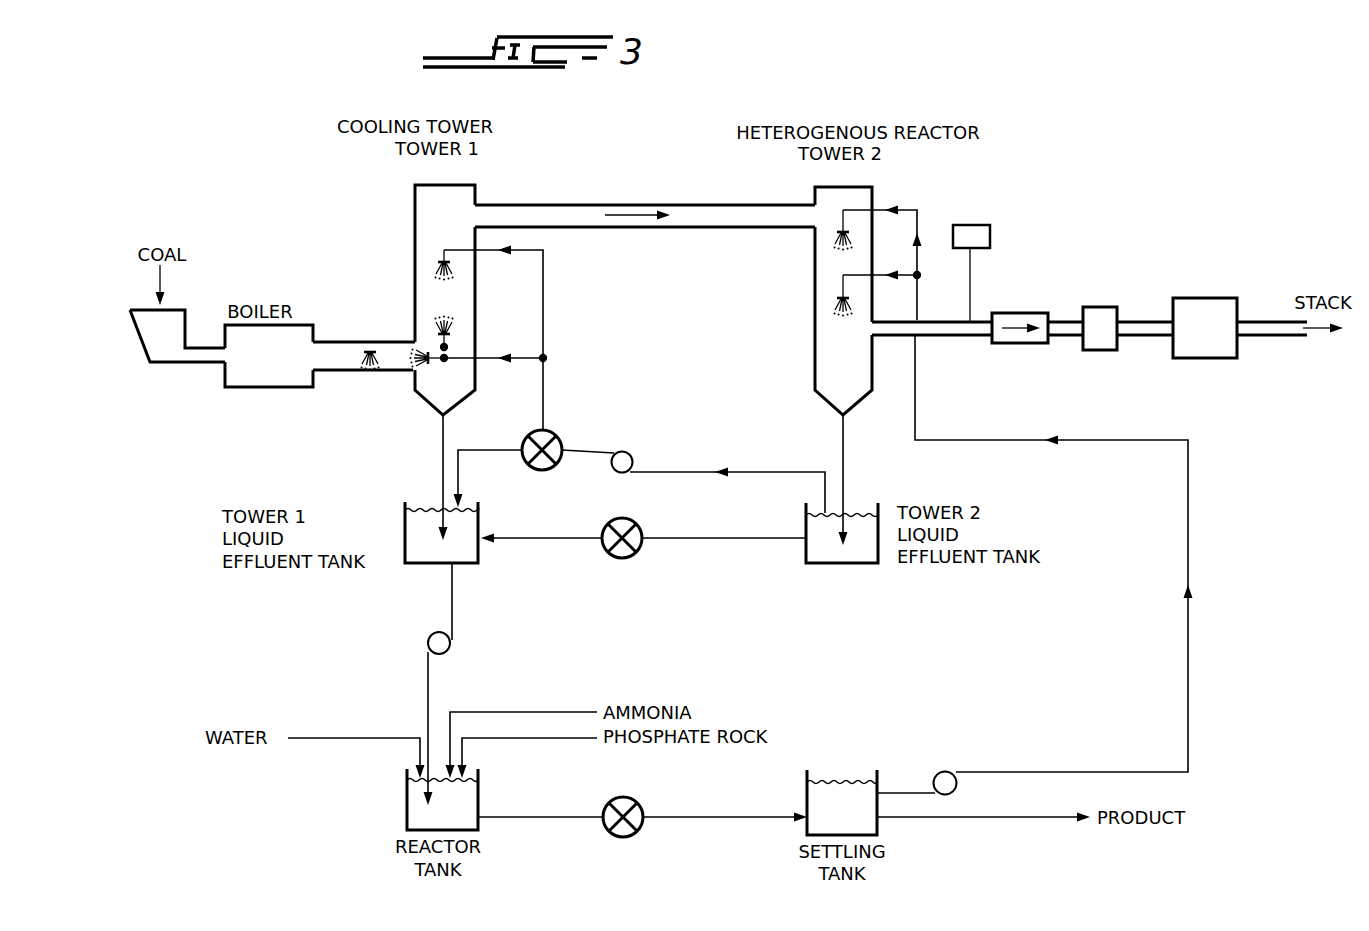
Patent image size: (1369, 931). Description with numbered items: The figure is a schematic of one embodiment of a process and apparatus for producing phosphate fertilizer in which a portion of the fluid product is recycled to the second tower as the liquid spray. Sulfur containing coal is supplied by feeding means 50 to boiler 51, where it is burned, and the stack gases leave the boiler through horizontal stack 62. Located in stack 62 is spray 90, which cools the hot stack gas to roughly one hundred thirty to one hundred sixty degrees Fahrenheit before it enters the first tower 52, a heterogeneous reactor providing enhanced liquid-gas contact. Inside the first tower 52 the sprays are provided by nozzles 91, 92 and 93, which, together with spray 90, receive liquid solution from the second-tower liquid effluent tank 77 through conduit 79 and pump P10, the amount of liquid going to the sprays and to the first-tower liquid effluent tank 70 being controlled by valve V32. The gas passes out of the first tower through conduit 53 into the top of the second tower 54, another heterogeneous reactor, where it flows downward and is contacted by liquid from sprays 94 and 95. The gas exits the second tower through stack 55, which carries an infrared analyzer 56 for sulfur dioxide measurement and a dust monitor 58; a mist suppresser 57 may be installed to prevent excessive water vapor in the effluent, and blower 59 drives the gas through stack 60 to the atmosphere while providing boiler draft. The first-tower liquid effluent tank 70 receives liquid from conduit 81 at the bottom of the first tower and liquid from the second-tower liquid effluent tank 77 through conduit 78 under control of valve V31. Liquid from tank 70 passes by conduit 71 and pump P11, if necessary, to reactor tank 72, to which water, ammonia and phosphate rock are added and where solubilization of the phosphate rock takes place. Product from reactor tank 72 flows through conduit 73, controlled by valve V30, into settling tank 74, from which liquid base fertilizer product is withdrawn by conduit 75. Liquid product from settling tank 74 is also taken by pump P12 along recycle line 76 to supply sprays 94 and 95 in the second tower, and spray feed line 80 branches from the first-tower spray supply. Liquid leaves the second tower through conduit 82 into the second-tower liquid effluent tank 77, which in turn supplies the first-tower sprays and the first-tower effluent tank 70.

The feeding means 50 is at (118, 318).
The boiler 51 is at (226, 382).
The tower 1 52 is at (415, 213).
The conduit 53 is at (633, 205).
The heterogenous reactor (tower 2) 54 is at (876, 192).
The stack 55 is at (955, 342).
The infrared analyzer 56 is at (970, 225).
The mist suppresser 57 is at (1027, 343).
The dust monitor 58 is at (1103, 307).
The blower 59 is at (1196, 298).
The stack 60 is at (1280, 336).
The stack 62 is at (352, 371).
The tower 1 liquid effluent tank 70 is at (478, 517).
The conduit 71 is at (452, 592).
The reactor tank 72 is at (478, 796).
The conduit 73 is at (563, 815).
The settling tank 74 is at (807, 795).
The conduit 75 is at (1003, 820).
The recycle line 76 is at (1187, 694).
The tower 2 liquid effluent tank 77 is at (858, 564).
The conduit 78 is at (753, 542).
The conduit 79 is at (763, 471).
The spray feed line 80 is at (548, 430).
The conduit 81 is at (443, 457).
The conduit 82 is at (843, 463).
The spray 90 is at (371, 350).
The nozzle 91 is at (444, 259).
The nozzle 92 is at (452, 346).
The nozzle 93 is at (436, 365).
The spray 94 is at (836, 231).
The spray 95 is at (837, 296).
The pump P10 is at (633, 452).
The pump P11 is at (428, 643).
The pump P12 is at (944, 772).
The valve V30 is at (638, 834).
The valve V31 is at (632, 558).
The valve V32 is at (559, 465).